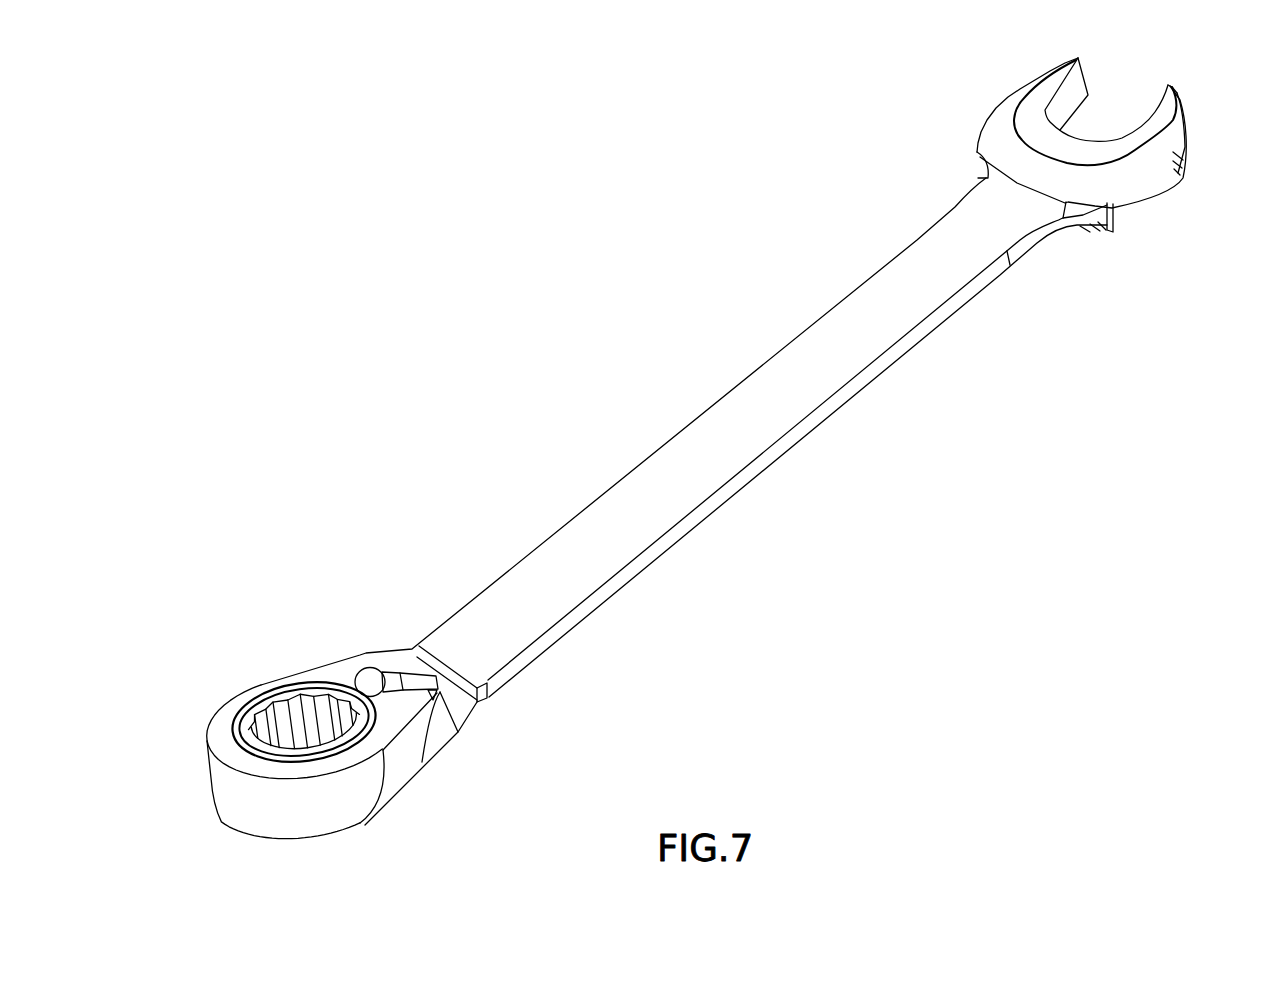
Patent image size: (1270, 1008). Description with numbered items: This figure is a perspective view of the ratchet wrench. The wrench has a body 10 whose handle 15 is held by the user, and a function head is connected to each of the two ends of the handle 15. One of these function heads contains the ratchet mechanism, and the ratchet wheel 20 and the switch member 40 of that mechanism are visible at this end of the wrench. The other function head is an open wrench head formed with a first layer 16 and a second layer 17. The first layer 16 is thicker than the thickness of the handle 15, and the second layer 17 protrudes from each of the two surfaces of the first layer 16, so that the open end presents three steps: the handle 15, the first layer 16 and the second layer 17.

The body 10 is at (710, 448).
The handle 15 is at (930, 303).
The first layer 16 is at (1115, 164).
The second layer 17 is at (1162, 109).
The ratchet wheel 20 is at (243, 705).
The switch member 40 is at (368, 678).